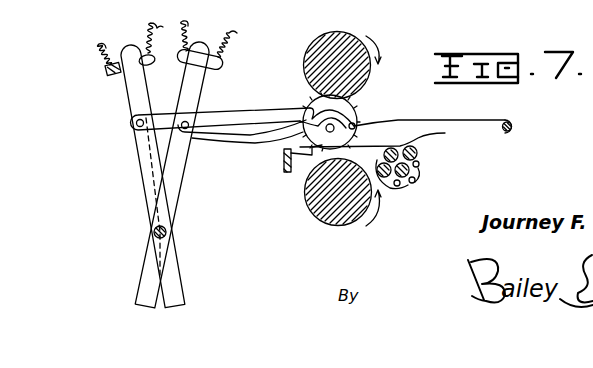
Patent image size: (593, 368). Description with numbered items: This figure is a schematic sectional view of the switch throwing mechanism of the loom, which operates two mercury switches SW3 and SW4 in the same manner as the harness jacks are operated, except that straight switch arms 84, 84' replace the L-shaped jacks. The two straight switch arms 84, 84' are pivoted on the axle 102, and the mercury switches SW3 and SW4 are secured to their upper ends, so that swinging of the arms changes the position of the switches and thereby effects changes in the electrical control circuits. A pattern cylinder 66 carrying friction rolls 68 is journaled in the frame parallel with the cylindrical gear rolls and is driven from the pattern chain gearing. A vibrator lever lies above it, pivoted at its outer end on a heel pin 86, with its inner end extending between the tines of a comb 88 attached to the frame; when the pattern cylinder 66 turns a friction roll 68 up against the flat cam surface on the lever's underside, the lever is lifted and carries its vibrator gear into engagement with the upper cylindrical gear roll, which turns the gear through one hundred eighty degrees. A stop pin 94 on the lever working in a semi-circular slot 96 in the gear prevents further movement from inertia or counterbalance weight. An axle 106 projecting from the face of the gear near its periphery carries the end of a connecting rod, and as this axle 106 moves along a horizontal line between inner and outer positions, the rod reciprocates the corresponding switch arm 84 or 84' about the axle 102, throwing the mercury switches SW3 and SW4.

The switch arm 84 is at (126, 176).
The switch arm 84' is at (187, 175).
The axle 102 is at (153, 232).
The mercury switch SW3 is at (108, 69).
The mercury switch SW4 is at (217, 69).
The axle 106 is at (360, 122).
The heel pin 86 is at (510, 140).
The semi-circular slot 96 is at (357, 96).
The stop pin 94 is at (317, 170).
The comb 88 is at (284, 172).
The friction rolls 68 is at (418, 152).
The pattern cylinder 66 is at (415, 179).